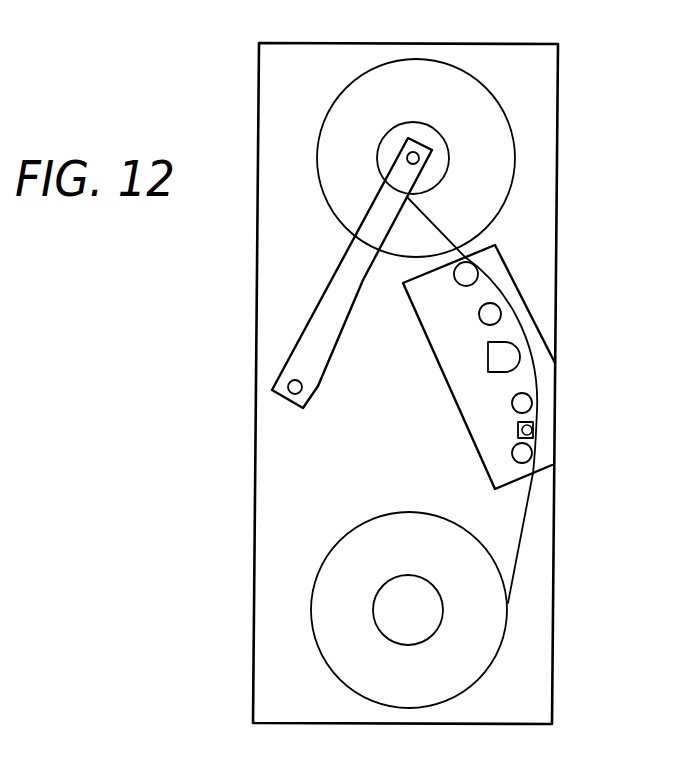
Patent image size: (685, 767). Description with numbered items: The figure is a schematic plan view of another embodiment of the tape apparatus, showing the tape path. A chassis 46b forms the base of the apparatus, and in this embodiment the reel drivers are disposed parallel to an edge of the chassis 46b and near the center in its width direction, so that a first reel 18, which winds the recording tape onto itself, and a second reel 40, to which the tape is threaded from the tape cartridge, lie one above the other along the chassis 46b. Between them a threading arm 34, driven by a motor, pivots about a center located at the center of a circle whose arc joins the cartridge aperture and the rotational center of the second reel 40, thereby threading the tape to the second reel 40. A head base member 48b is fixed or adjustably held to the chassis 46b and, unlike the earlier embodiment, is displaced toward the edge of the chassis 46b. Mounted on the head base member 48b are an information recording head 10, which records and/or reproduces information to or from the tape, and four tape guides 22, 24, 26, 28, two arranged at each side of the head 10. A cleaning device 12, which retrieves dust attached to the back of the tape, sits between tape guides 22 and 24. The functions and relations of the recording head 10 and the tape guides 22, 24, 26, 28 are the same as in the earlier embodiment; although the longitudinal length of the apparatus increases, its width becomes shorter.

The information recording head 10 is at (492, 362).
The cleaning device 12 is at (519, 430).
The first reel 18 is at (320, 612).
The tape guide 22 is at (514, 405).
The tape guide 24 is at (513, 459).
The tape guide 26 is at (483, 318).
The tape guide 28 is at (458, 281).
The threading arm 34 is at (300, 347).
The second reel 40 is at (453, 74).
The chassis 46b is at (555, 112).
The head base member 48b is at (507, 282).